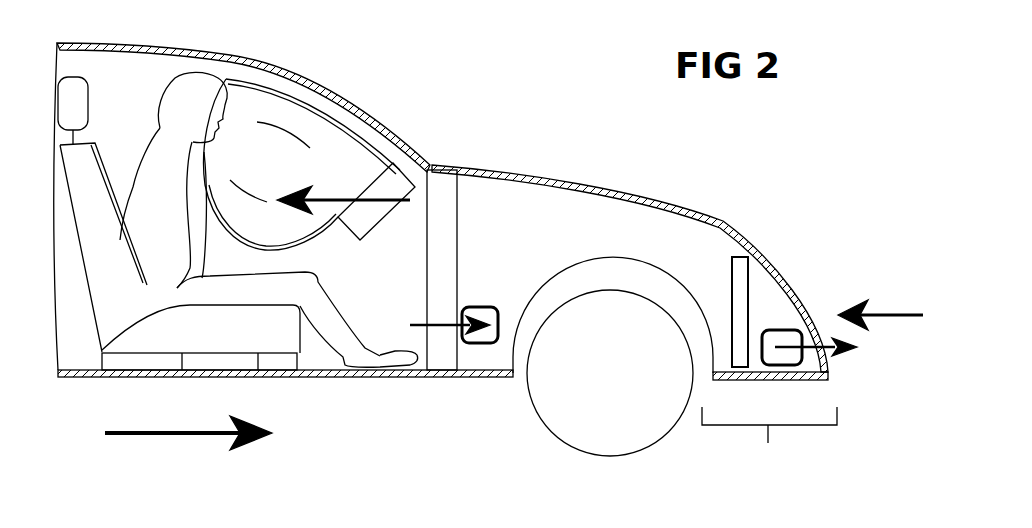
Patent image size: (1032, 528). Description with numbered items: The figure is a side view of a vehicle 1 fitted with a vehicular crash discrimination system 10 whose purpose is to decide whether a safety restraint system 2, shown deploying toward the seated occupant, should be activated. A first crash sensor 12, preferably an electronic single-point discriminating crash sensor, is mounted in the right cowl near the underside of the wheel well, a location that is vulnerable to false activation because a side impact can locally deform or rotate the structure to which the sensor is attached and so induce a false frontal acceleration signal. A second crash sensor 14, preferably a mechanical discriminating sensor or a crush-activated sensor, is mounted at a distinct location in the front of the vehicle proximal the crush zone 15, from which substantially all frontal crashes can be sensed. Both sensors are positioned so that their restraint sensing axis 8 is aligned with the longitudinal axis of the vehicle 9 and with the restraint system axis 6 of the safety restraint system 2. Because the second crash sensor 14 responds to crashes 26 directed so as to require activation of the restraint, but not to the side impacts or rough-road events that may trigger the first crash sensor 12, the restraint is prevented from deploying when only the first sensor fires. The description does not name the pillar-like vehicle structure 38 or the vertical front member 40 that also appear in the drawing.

The vehicle 1 is at (583, 182).
The safety restraint system 2 is at (375, 228).
The restraint system axis 6 is at (336, 200).
The restraint sensing axis 8 is at (418, 323).
The longitudinal axis of the vehicle 9 is at (155, 433).
The vehicular crash discrimination system 10 is at (440, 432).
The first crash sensor 12 is at (482, 307).
The second crash sensor 14 is at (782, 330).
The crush zone 15 is at (769, 442).
The crashes 26 is at (872, 320).
The B-pillar 38 is at (458, 198).
The bumper cross member 40 is at (731, 270).